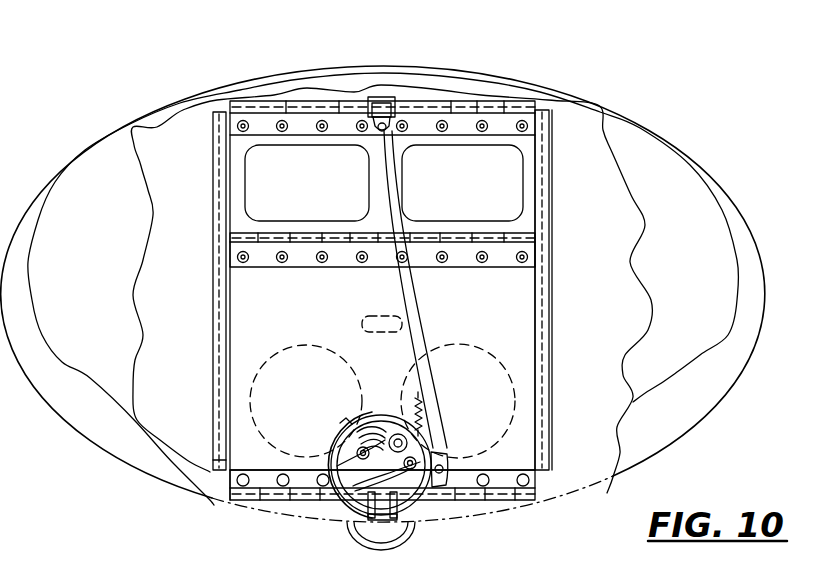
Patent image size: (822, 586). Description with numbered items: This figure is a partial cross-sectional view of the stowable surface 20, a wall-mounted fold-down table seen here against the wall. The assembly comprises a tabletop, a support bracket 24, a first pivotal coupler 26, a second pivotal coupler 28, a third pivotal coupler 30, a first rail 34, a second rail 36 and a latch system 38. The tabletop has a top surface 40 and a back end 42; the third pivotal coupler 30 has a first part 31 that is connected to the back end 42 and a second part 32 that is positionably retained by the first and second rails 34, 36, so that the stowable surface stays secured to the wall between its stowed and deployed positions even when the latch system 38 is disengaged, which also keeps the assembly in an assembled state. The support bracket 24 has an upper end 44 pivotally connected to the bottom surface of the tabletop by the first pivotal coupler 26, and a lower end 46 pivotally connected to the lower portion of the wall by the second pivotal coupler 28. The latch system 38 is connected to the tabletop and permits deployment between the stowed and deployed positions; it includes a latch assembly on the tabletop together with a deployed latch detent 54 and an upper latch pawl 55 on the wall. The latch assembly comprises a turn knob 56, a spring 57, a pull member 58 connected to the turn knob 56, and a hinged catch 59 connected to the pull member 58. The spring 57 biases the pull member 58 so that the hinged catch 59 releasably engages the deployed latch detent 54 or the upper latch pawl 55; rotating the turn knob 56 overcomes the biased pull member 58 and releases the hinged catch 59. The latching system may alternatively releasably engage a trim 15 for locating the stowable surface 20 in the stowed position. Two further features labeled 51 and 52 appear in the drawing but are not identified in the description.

The trim 15 is at (394, 67).
The stowable surface 20 is at (676, 99).
The support bracket 24 is at (248, 322).
The first pivotal coupler 26 is at (509, 244).
The second pivotal coupler 28 is at (536, 500).
The third pivotal coupler 30 is at (520, 108).
The first part 31 is at (257, 126).
The second part 32 is at (240, 145).
The first rail 34 is at (213, 393).
The second rail 36 is at (552, 416).
The latch system 38 is at (426, 323).
The top surface 40 is at (667, 417).
The back end 42 is at (565, 106).
The upper end 44 is at (261, 262).
The lower end 46 is at (257, 473).
The rail lower portion 51 is at (218, 472).
The bottom rail strip 52 is at (537, 471).
The deployed latch detent 54 is at (364, 320).
The upper latch pawl 55 is at (396, 99).
The turn knob 56 is at (417, 507).
The spring 57 is at (430, 416).
The pull member 58 is at (424, 300).
The hinged catch 59 is at (382, 97).